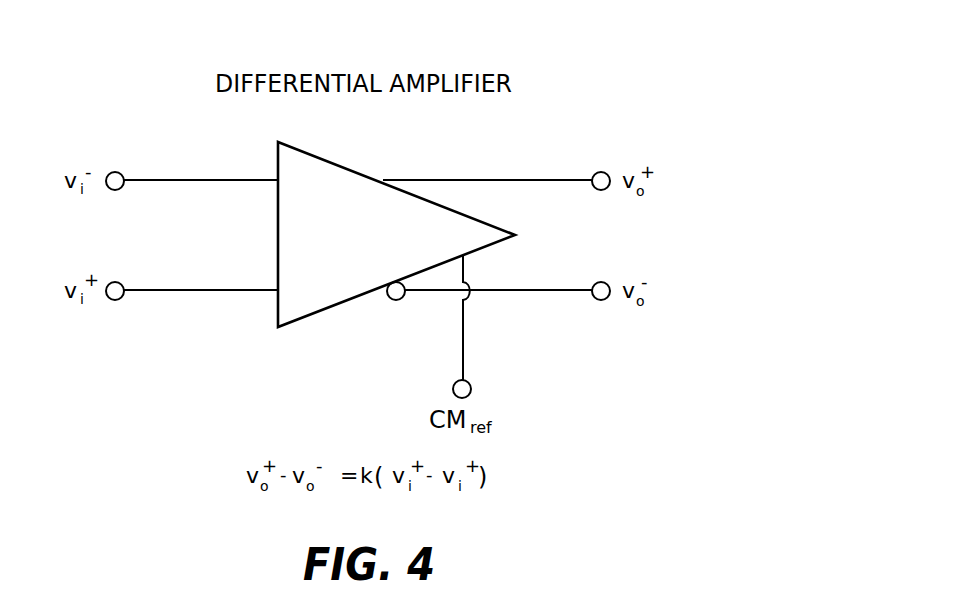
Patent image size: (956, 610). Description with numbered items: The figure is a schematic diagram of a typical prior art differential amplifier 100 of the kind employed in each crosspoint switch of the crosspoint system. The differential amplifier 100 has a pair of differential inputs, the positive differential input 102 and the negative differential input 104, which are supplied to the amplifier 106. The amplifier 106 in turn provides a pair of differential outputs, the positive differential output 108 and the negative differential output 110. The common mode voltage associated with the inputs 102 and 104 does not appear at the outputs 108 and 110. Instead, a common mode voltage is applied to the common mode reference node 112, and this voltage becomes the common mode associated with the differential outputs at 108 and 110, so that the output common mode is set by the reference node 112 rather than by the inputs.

The differential amplifier 100 is at (615, 23).
The differential input v_i+ 102 is at (185, 290).
The differential input v_i- 104 is at (185, 180).
The amplifier 106 is at (335, 163).
The differential output V_0+ 108 is at (523, 180).
The differential output V_0- 110 is at (523, 290).
The common mode reference node 112 is at (472, 389).